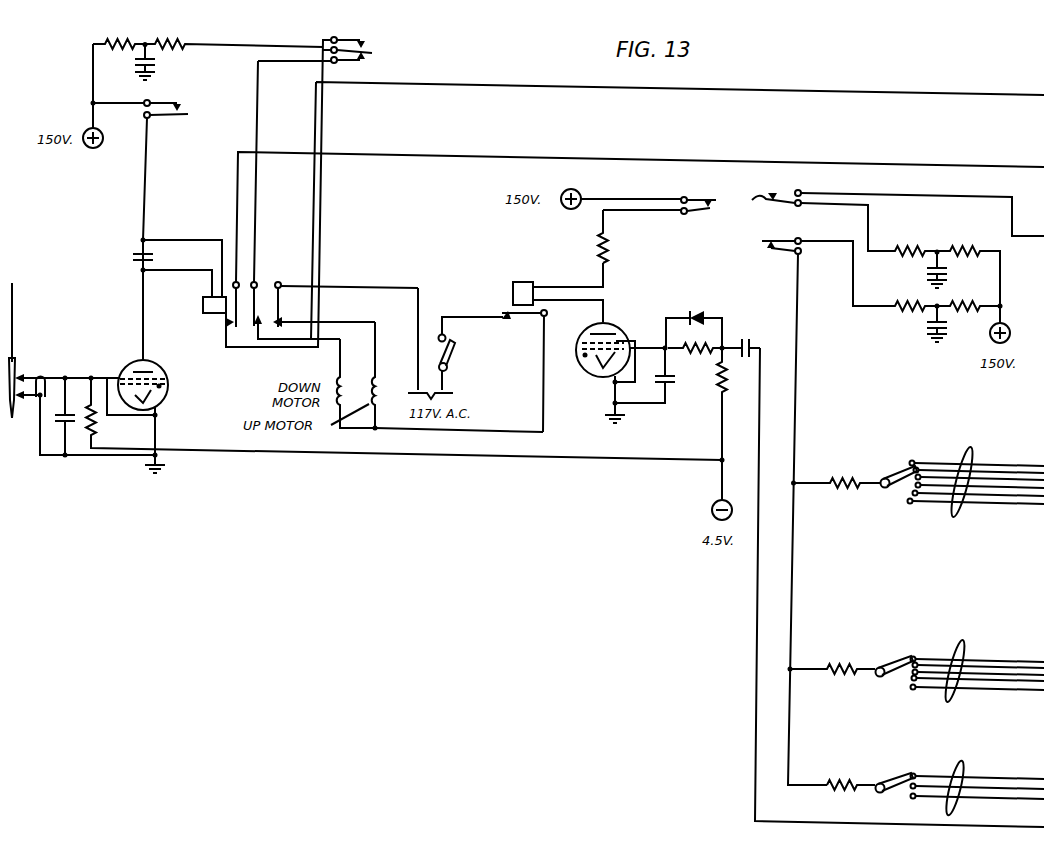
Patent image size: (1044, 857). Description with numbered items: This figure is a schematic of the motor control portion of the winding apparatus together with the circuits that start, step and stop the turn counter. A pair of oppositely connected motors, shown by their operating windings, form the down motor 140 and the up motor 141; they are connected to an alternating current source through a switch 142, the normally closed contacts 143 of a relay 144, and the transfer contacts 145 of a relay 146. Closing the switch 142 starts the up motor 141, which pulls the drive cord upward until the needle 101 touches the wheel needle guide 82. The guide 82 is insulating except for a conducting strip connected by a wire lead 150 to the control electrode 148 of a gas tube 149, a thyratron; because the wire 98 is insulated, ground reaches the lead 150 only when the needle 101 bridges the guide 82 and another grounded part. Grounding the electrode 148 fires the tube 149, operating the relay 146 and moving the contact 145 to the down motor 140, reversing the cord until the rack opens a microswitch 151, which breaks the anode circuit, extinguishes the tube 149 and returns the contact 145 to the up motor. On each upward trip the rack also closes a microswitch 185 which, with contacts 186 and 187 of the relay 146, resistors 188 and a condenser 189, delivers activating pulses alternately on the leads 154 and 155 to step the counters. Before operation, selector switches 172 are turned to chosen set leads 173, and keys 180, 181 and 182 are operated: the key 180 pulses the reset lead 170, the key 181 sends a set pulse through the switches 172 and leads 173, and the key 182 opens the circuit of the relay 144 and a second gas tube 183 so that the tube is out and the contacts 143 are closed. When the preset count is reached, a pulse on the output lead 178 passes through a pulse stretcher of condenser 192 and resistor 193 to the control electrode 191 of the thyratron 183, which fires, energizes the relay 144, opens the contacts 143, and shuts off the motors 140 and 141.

The wire 98 is at (14, 314).
The needle 101 is at (15, 366).
The needle guide 82 is at (41, 372).
The wire lead 150 is at (85, 374).
The control electrode 148 is at (163, 374).
The gas tube 149 is at (164, 393).
The relay 146 is at (202, 305).
The contacts of relay 146 186 is at (225, 322).
The contacts of relay 146 187 is at (257, 332).
The transfer contacts 145 is at (273, 320).
The down motor 140 is at (347, 383).
The up motor 141 is at (385, 385).
The switch 142 is at (455, 355).
The normally closed contacts 143 is at (523, 313).
The relay 144 is at (524, 281).
The control electrode 191 is at (584, 335).
The gas tube 183 is at (616, 334).
The condenser 192 is at (677, 378).
The resistor 193 is at (702, 345).
The resistors 188 is at (176, 40).
The condenser 189 is at (157, 63).
The microswitch 151 is at (182, 111).
The microswitch 185 is at (375, 51).
The activating lead 154 is at (768, 93).
The activating lead 155 is at (768, 162).
The key 182 is at (696, 199).
The key 180 is at (777, 196).
The key 181 is at (782, 255).
The reset lead 170 is at (942, 197).
The selector switches 172 is at (899, 470).
The set leads 173 is at (970, 456).
The output lead 178 is at (755, 698).